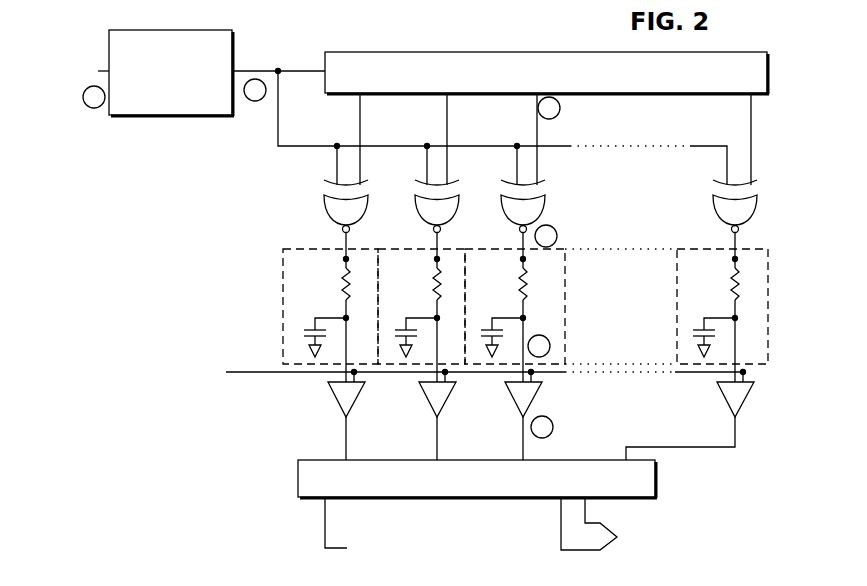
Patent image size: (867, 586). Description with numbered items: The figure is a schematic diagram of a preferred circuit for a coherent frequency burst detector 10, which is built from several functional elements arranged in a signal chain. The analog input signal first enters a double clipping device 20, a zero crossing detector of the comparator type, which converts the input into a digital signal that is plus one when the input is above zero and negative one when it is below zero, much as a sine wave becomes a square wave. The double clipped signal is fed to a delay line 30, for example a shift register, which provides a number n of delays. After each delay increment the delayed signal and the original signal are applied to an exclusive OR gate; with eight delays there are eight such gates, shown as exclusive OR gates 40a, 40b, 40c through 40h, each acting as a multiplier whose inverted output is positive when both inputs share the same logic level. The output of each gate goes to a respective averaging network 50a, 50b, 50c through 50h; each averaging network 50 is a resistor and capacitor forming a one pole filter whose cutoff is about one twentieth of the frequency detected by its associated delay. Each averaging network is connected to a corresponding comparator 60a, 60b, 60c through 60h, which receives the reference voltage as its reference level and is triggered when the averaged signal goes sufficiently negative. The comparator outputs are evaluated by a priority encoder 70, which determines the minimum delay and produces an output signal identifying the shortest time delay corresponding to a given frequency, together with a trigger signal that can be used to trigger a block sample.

The coherent frequency burst detector 10 is at (152, 334).
The double clipping device 20 is at (175, 30).
The delay line 30 is at (547, 50).
The exclusive OR gate 40a is at (326, 214).
The exclusive OR gate 40b is at (418, 214).
The exclusive OR gate 40c is at (504, 214).
The exclusive OR gate 40h is at (718, 210).
The averaging network 50 is at (283, 330).
The averaging network 50a is at (337, 288).
The averaging network 50b is at (428, 288).
The averaging network 50c is at (514, 288).
The averaging network 50h is at (728, 288).
The comparator 60a is at (337, 394).
The comparator 60b is at (428, 394).
The comparator 60c is at (514, 394).
The comparator 60h is at (726, 394).
The priority encoder 70 is at (302, 481).